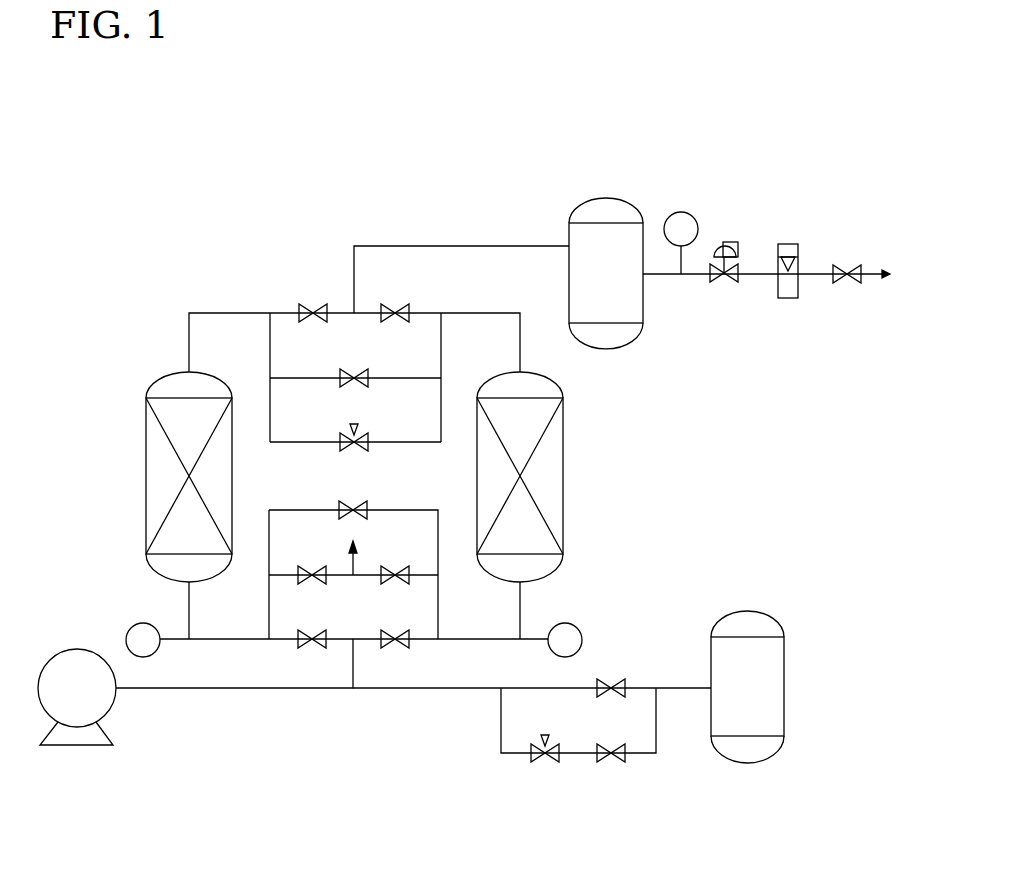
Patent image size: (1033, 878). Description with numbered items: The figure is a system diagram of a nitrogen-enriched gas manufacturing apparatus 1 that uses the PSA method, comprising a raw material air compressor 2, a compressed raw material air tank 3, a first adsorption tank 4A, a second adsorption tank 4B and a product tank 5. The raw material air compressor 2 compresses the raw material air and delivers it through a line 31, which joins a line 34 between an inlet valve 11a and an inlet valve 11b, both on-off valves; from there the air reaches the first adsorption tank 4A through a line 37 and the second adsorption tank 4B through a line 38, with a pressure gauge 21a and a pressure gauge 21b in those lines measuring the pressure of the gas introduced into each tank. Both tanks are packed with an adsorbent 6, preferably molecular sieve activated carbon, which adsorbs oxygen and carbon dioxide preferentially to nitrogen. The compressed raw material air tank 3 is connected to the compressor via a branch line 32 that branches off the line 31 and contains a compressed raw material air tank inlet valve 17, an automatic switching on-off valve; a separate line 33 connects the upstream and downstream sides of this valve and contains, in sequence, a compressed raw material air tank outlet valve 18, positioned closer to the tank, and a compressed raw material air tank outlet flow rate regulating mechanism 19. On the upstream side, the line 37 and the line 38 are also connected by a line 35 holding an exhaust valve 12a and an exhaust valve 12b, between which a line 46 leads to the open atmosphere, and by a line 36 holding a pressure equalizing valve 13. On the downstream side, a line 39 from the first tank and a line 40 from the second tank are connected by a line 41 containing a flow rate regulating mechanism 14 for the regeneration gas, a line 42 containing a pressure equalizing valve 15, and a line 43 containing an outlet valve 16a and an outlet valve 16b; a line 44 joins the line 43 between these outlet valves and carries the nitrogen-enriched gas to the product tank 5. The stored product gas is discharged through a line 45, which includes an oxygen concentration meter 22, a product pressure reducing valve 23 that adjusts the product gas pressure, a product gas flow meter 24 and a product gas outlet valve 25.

The nitrogen-enriched gas manufacturing apparatus 1 is at (152, 188).
The raw material air compressor 2 is at (70, 663).
The compressed raw material air tank 3 is at (770, 687).
The first adsorption tank 4A is at (138, 431).
The second adsorption tank 4B is at (571, 431).
The product tank 5 is at (634, 300).
The adsorbent 6 is at (155, 492).
The inlet valve 11a is at (312, 630).
The inlet valve 11b is at (395, 630).
The exhaust valve 12a is at (312, 566).
The exhaust valve 12b is at (395, 566).
The pressure equalizing valve 13 is at (353, 501).
The flow rate regulating mechanism 14 is at (358, 430).
The pressure equalizing valve 15 is at (354, 369).
The outlet valve 16a is at (313, 304).
The outlet valve 16b is at (397, 304).
The compressed raw material air tank inlet valve 17 is at (611, 679).
The compressed raw material air tank outlet valve 18 is at (611, 744).
The compressed raw material air tank outlet flow rate regulating mechanism 19 is at (541, 740).
The pressure gauge 21a is at (140, 632).
The pressure gauge 21b is at (580, 633).
The oxygen concentration meter 22 is at (681, 212).
The product pressure reducing valve 23 is at (729, 241).
The product gas flow meter 24 is at (788, 244).
The product gas outlet valve 25 is at (847, 265).
The line 31 is at (352, 663).
The branch line 32 is at (385, 690).
The line 33 is at (501, 725).
The line 34 is at (424, 643).
The line 35 is at (427, 567).
The line 36 is at (408, 509).
The line 37 is at (192, 608).
The line 38 is at (524, 608).
The line 39 is at (187, 337).
The line 40 is at (522, 349).
The line 41 is at (312, 440).
The line 42 is at (312, 376).
The line 43 is at (276, 310).
The line 44 is at (465, 245).
The line 45 is at (818, 276).
The line 46 is at (357, 568).